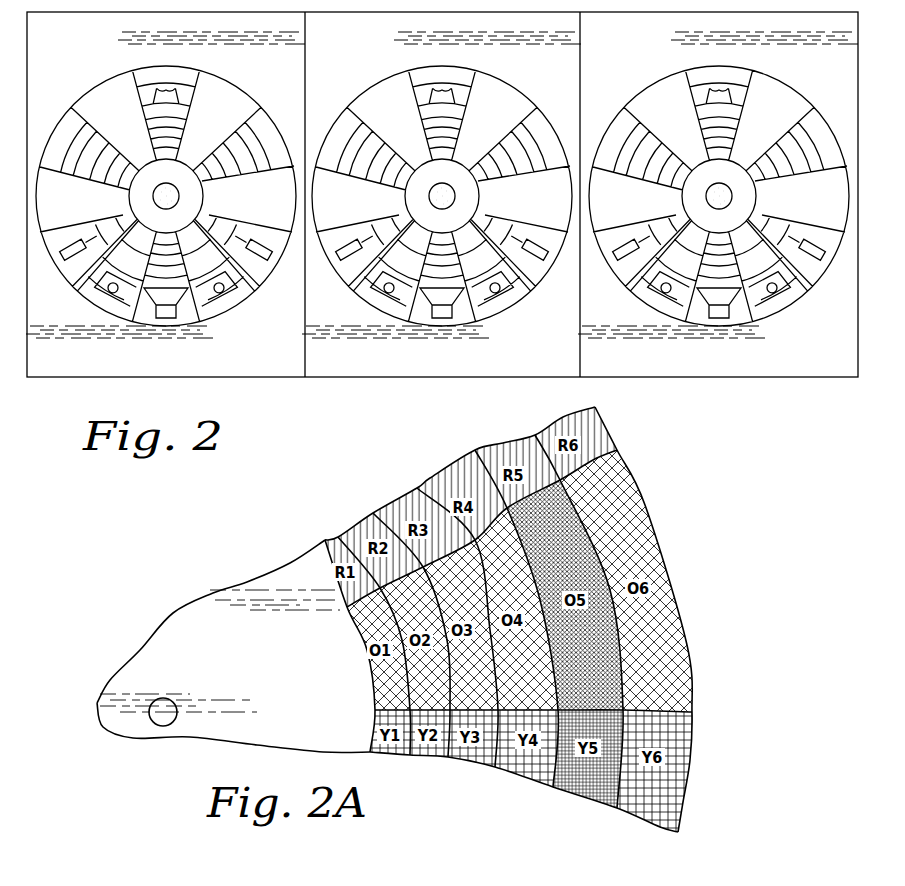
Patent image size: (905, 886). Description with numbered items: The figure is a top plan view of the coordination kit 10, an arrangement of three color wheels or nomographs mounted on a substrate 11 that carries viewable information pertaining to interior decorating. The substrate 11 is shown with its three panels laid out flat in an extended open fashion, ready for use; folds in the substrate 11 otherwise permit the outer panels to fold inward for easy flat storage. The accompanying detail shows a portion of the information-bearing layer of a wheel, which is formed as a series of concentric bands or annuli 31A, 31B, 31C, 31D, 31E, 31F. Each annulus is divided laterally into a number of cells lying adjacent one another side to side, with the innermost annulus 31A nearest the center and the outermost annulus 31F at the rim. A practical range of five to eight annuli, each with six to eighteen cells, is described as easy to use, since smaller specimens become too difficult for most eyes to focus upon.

In FIG. 2, the coordination kit 10 is at (442, 225).
In FIG. 2, the substrate 11 is at (362, 56).
In FIG. 2A, the innermost annulus 31A is at (373, 618).
In FIG. 2A, the annulus 31B is at (383, 668).
In FIG. 2A, the annulus 31C is at (375, 693).
In FIG. 2A, the annulus 31D is at (592, 543).
In FIG. 2A, the annulus 31E is at (641, 627).
In FIG. 2A, the annulus 31F is at (655, 641).